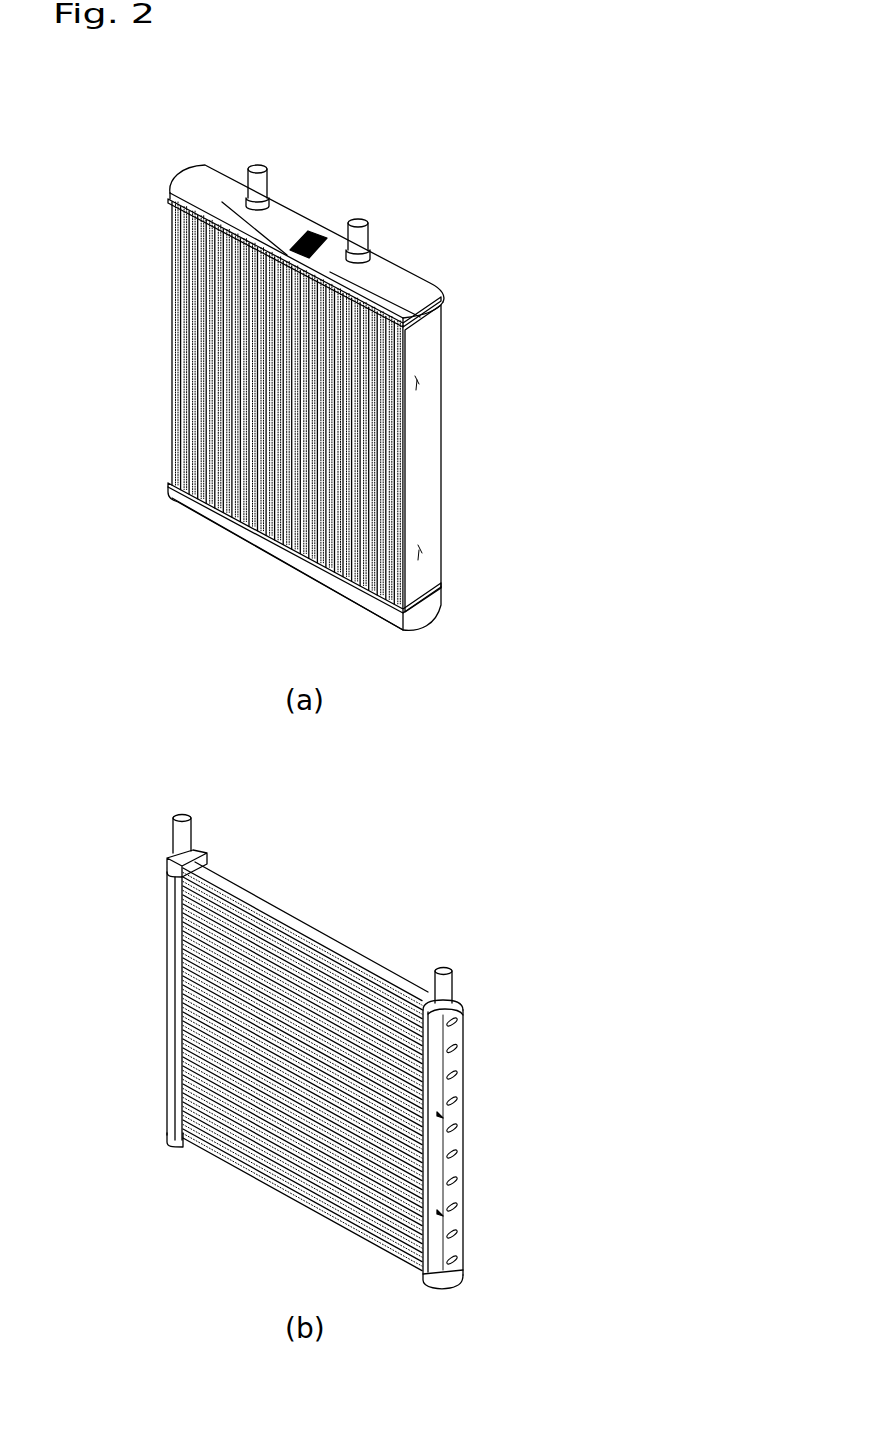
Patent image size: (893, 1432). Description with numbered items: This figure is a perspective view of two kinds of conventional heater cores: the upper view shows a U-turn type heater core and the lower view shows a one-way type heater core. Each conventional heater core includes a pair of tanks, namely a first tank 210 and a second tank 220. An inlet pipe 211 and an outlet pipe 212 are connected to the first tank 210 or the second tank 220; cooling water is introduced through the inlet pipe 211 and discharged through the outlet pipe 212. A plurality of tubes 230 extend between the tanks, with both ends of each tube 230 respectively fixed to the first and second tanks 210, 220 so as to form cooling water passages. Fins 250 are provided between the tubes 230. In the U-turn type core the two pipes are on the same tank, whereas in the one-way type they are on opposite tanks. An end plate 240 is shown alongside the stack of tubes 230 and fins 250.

The first tank 210 is at (443, 290).
The inlet pipe 211 is at (259, 165).
The outlet pipe 212 is at (362, 222).
The second tank 220 is at (338, 590).
The tube 230 is at (193, 403).
The end plate 240 is at (430, 455).
The fin 250 is at (200, 318).